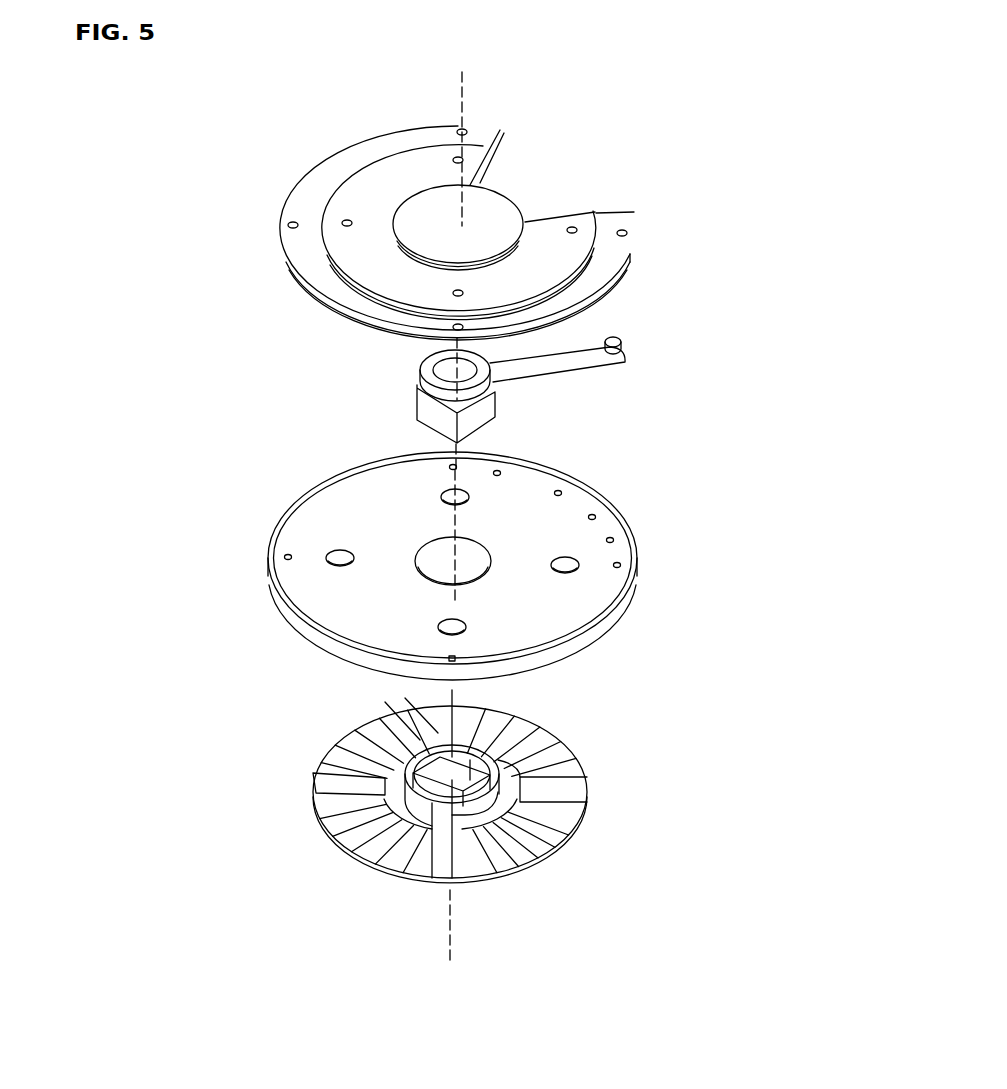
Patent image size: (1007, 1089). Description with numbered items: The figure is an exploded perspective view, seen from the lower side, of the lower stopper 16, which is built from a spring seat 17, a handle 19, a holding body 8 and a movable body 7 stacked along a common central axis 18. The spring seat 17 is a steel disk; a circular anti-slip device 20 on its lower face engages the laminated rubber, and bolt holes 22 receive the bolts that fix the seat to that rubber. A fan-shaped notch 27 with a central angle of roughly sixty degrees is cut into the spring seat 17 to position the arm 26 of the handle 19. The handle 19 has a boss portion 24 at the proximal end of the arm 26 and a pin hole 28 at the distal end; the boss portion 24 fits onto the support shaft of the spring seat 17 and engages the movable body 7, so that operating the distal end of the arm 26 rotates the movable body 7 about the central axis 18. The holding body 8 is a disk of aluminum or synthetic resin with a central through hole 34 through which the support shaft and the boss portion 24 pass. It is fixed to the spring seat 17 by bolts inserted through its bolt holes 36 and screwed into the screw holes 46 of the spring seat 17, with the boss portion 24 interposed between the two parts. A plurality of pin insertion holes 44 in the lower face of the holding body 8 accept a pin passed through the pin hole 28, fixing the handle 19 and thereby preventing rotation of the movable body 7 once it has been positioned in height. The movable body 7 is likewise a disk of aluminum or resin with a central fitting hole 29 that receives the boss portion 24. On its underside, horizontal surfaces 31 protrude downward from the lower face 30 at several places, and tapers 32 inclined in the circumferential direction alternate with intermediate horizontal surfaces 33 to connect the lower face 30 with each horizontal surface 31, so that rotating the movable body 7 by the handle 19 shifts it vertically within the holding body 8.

The lower stopper 16 is at (634, 52).
The central axis 18 is at (466, 78).
The spring seat 17 is at (626, 258).
The notch 27 is at (573, 180).
The circular anti-slip device 20 is at (425, 238).
The bolt holes 36 is at (470, 129).
The bolt holes 22 is at (452, 161).
The handle 19 is at (578, 383).
The arm 26 is at (541, 373).
The pin hole 28 is at (623, 343).
The boss portion 24 is at (493, 414).
The holding body 8 is at (638, 538).
The through hole 34 is at (433, 571).
The screw holes 46 is at (450, 470).
The pin insertion holes 44 is at (497, 477).
The movable body 7 is at (589, 826).
The lower face 30 is at (480, 736).
The fitting hole 29 is at (437, 831).
The horizontal surfaces 31 is at (415, 712).
The tapers 32 is at (345, 727).
The intermediate horizontal surfaces 33 is at (335, 740).